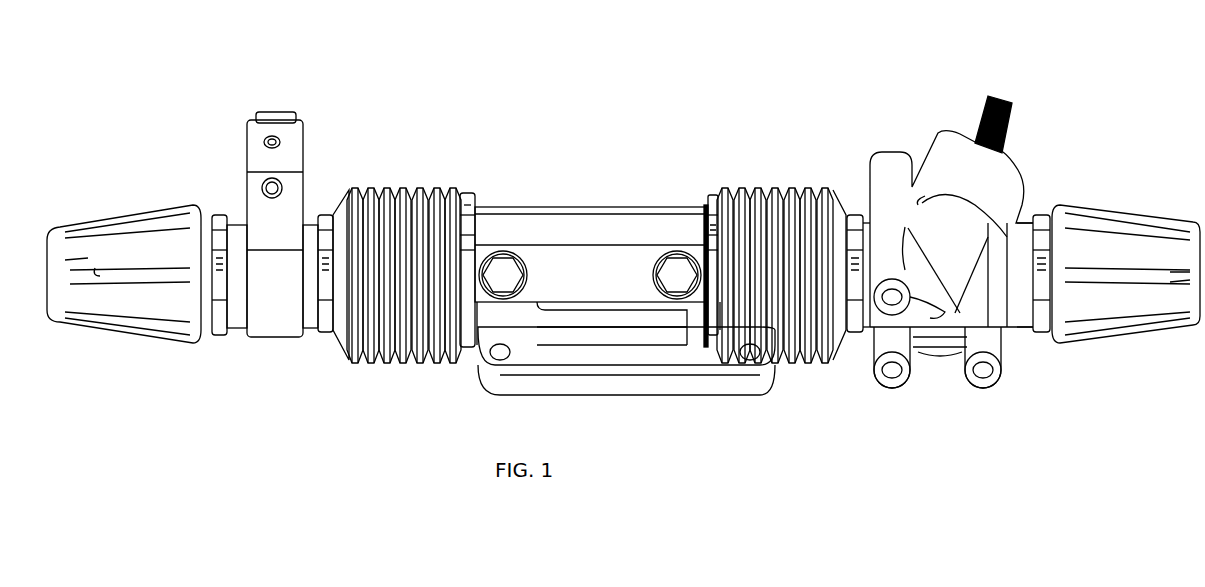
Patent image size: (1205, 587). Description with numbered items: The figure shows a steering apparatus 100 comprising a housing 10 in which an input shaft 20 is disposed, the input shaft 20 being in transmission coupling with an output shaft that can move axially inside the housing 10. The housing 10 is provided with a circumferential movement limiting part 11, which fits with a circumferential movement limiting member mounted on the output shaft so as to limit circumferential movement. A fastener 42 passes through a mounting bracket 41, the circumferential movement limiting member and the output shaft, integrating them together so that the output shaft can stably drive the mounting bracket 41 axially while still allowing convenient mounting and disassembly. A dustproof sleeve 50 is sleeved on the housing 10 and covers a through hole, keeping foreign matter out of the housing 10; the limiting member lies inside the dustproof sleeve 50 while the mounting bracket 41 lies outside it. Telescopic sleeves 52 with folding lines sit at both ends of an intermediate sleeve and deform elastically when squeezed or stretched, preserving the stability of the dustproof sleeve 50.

The steering apparatus 100 is at (650, 32).
The housing 10 is at (1050, 213).
The circumferential movement limiting part 11 is at (706, 207).
The input shaft 20 is at (1012, 97).
The mounting bracket 41 is at (585, 270).
The fastener 42 is at (512, 277).
The dustproof sleeve 50 is at (430, 372).
The telescopic sleeves 52 is at (373, 188).